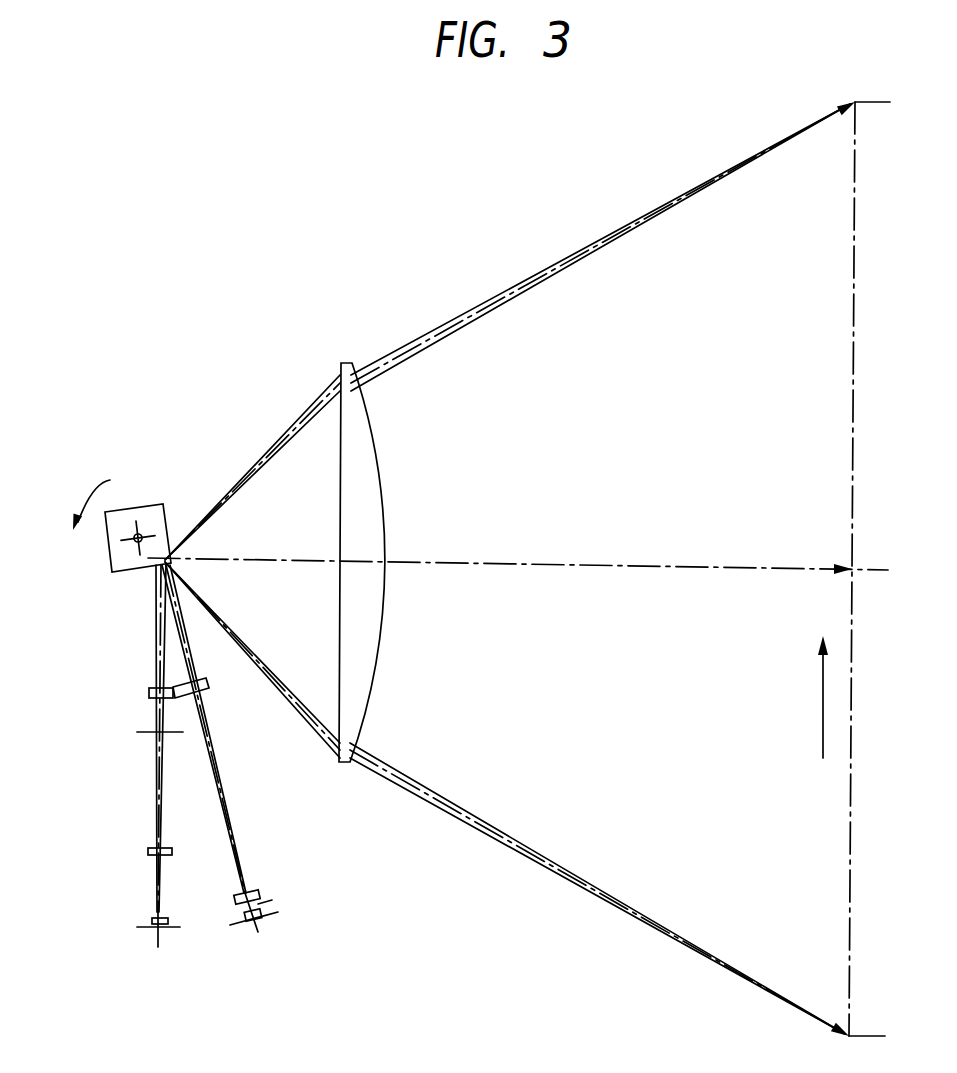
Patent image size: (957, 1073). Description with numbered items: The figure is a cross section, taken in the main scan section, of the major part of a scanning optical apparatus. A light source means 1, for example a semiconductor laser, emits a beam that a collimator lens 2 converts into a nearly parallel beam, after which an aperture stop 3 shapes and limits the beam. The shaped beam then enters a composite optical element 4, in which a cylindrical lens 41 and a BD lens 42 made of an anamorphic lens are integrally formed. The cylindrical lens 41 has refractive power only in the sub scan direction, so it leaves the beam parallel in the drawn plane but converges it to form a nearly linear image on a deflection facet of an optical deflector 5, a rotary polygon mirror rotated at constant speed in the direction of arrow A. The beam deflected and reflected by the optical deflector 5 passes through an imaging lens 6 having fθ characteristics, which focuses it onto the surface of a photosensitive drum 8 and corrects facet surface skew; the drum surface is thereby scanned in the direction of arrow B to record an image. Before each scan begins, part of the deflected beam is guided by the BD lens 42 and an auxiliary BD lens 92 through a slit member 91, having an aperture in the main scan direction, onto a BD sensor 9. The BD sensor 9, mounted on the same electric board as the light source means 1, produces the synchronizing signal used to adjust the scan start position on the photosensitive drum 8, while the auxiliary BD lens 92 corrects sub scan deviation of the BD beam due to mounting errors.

The light source means 1 is at (138, 927).
The collimator lens 2 is at (148, 851).
The aperture stop 3 is at (137, 733).
The composite optical element 4 is at (219, 714).
The cylindrical lens 41 is at (168, 700).
The BD lens 42 is at (204, 683).
The optical deflector 5 is at (112, 572).
The imaging lens 6 is at (340, 765).
The photosensitive drum 8 is at (850, 845).
The BD sensor 9 is at (239, 765).
The slit member 91 is at (233, 910).
The auxiliary BD lens 92 is at (263, 893).
The direction of rotation of the optical deflector A is at (85, 492).
The scan direction on the photosensitive drum B is at (823, 750).